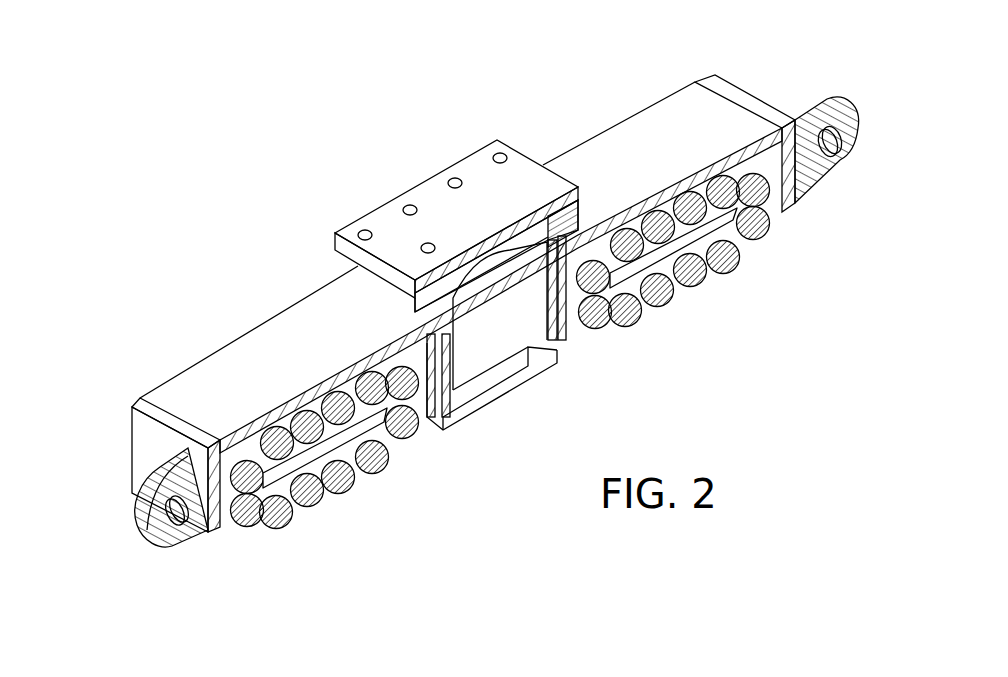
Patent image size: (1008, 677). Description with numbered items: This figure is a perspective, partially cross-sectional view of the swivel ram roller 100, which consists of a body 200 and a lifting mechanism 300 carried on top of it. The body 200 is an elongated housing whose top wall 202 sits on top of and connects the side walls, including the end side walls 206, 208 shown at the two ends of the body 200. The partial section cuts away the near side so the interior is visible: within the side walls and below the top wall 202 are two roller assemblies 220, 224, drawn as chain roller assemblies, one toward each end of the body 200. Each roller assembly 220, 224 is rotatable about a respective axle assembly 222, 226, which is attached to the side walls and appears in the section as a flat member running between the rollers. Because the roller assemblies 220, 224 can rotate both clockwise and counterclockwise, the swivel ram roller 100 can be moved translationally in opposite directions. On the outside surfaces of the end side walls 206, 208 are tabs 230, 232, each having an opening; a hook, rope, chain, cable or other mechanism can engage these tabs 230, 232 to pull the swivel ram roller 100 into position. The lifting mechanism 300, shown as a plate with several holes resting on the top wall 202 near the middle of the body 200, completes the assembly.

The swivel ram roller 100 is at (417, 238).
The body 200 is at (501, 242).
The top wall 202 is at (682, 95).
The side wall 206 is at (797, 198).
The side wall 208 is at (216, 518).
The roller assembly 220 is at (673, 275).
The axle assembly 222 is at (748, 236).
The roller assembly 224 is at (325, 469).
The axle assembly 226 is at (355, 435).
The tab 230 is at (833, 103).
The tab 232 is at (140, 530).
The lifting mechanism 300 is at (456, 207).